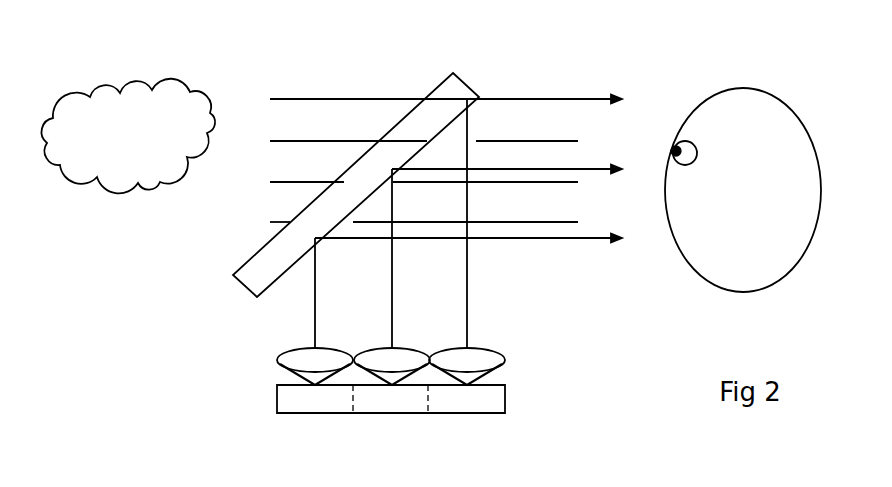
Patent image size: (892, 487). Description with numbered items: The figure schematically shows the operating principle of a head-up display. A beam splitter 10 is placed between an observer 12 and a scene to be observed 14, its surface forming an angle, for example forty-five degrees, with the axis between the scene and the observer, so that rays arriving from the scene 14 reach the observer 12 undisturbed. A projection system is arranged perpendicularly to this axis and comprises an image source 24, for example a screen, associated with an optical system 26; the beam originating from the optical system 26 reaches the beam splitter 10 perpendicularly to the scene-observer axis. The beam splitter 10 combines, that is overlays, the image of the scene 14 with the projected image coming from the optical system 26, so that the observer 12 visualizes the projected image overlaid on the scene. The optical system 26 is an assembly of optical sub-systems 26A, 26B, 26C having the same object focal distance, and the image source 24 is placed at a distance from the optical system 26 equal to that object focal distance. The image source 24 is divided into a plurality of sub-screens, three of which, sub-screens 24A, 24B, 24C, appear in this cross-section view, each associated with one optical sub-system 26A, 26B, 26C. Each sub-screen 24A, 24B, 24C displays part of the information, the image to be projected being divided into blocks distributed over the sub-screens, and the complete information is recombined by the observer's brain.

The beam splitter 10 is at (450, 88).
The observer 12 is at (742, 99).
The scene to be observed 14 is at (106, 103).
The image source 24 is at (441, 421).
The sub-screen 24A is at (312, 405).
The sub-screen 24B is at (390, 405).
The sub-screen 24C is at (468, 405).
The optical system 26 is at (429, 348).
The optical sub-system 26A is at (296, 358).
The optical sub-system 26B is at (373, 358).
The optical sub-system 26C is at (450, 358).